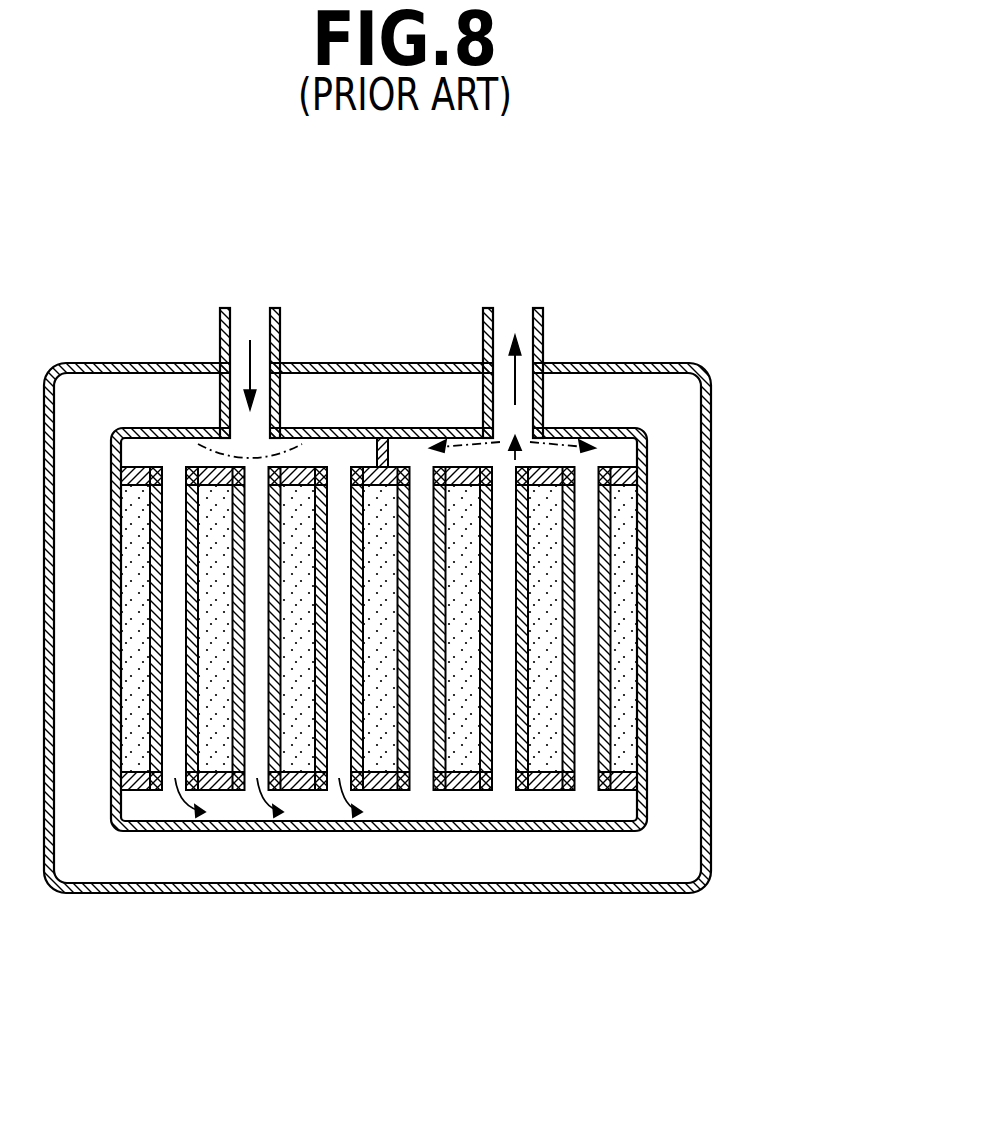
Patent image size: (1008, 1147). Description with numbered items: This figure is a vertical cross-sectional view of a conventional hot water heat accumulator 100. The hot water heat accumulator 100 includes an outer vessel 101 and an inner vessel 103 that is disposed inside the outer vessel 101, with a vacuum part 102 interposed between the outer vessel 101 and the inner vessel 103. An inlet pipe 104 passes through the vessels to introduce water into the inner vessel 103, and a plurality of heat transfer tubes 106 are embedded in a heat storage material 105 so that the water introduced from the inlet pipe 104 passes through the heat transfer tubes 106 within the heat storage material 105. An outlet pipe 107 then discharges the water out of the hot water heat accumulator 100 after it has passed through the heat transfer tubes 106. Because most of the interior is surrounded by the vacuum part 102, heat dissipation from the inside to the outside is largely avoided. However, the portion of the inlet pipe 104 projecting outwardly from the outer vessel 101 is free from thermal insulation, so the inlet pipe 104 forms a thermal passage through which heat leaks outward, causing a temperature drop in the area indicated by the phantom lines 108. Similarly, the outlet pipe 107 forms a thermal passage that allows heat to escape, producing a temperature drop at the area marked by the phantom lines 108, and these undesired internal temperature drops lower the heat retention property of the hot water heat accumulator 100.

The hot water heat accumulator 100 is at (808, 202).
The outer vessel 101 is at (712, 623).
The vacuum part 102 is at (672, 523).
The inner vessel 103 is at (534, 828).
The inlet pipe 104 is at (220, 320).
The heat storage material 105 is at (172, 963).
The heat transfer tubes 106 is at (640, 295).
The outlet pipe 107 is at (548, 320).
The phantom lines 108 is at (283, 443).